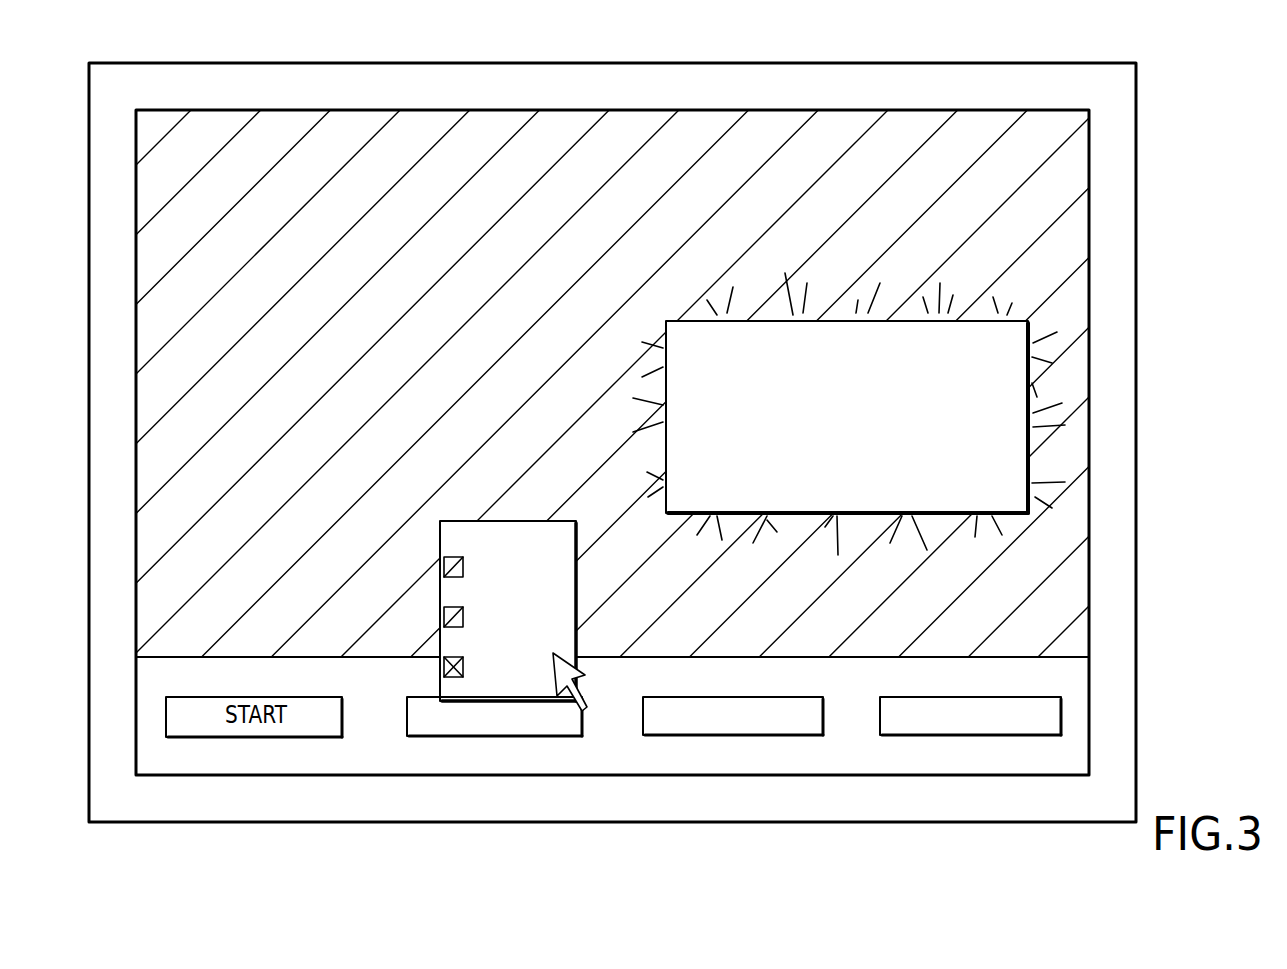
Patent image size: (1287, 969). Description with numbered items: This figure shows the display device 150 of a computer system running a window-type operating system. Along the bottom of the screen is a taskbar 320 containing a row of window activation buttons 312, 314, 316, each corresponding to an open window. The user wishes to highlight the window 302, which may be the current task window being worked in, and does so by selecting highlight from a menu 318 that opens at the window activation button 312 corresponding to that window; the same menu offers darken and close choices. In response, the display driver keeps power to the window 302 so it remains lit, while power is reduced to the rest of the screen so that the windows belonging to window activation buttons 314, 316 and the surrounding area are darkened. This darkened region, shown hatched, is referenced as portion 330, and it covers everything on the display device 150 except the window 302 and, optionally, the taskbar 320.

The display device 150 is at (1084, 59).
The darkened portion 330 is at (1078, 377).
The window 302 is at (890, 320).
The menu 318 is at (482, 520).
The window activation button 312 is at (552, 736).
The window activation button 314 is at (783, 735).
The window activation button 316 is at (1027, 735).
The taskbar 320 is at (732, 775).